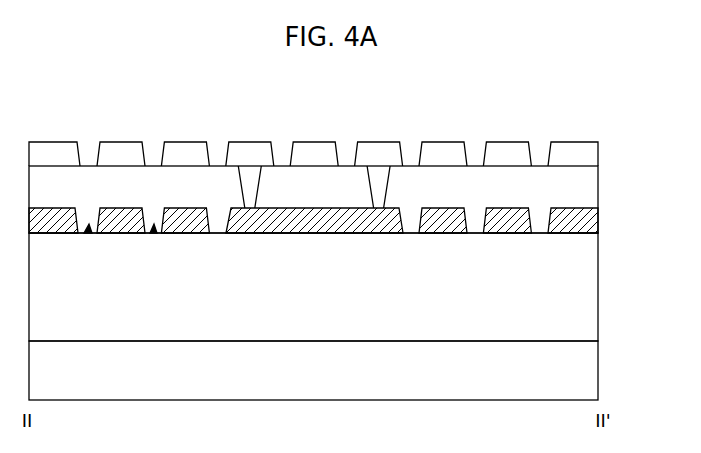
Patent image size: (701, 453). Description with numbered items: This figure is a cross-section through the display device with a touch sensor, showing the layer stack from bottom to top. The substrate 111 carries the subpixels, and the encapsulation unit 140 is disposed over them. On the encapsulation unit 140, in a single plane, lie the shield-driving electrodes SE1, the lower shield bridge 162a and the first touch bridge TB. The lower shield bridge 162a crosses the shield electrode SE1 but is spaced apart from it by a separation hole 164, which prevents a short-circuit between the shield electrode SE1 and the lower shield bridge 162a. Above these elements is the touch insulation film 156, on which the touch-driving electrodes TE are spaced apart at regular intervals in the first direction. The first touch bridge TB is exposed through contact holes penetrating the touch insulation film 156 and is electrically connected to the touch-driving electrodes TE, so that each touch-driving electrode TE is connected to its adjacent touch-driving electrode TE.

The touch-driving electrode TE is at (56, 141).
The shield-driving electrode SE1 is at (48, 234).
The lower shield bridge 162a is at (122, 234).
The separation hole 164 is at (87, 234).
The first touch bridge TB is at (316, 234).
The touch insulation film 156 is at (598, 185).
The encapsulation unit 140 is at (598, 287).
The substrate 111 is at (598, 370).